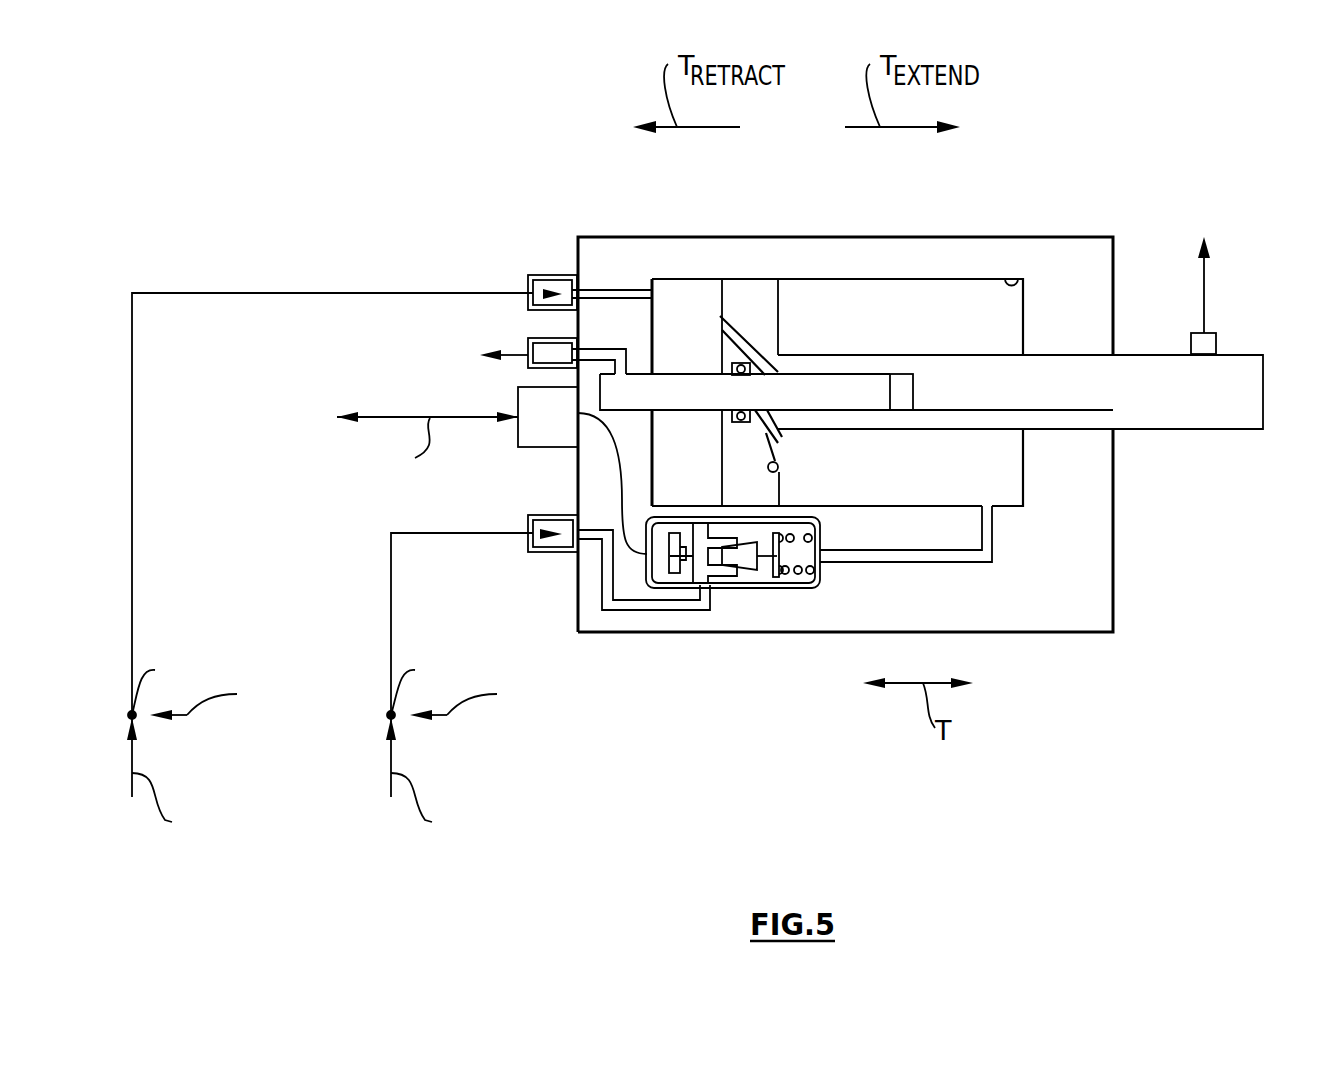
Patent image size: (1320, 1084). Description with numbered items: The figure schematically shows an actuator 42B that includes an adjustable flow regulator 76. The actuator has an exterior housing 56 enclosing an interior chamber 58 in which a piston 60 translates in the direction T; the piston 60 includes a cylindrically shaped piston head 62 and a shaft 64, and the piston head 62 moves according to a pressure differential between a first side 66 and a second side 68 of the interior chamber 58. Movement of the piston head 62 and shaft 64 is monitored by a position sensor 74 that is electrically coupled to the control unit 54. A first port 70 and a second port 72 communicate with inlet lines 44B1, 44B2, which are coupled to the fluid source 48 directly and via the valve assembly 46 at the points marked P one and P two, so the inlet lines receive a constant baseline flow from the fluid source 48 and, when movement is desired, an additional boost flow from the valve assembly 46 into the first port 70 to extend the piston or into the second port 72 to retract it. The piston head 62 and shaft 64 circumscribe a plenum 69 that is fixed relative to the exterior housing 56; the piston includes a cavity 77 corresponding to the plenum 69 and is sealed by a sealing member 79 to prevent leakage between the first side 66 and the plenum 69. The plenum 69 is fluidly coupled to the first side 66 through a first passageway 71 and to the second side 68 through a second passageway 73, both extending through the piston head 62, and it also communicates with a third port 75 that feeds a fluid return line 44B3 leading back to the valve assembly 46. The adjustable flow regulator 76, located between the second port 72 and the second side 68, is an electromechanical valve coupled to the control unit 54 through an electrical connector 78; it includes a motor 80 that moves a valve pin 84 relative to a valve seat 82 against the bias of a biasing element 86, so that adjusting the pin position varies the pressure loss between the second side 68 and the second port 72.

The actuator 42B is at (520, 168).
The inlet line 44B1 is at (432, 293).
The inlet line 44B2 is at (410, 533).
The fluid return line 44B3 is at (517, 350).
The valve assembly 46 is at (339, 838).
The fluid source 48 is at (352, 713).
The control unit 54 is at (1204, 270).
The exterior housing 56 is at (978, 237).
The interior chamber 58 is at (1017, 283).
The piston 60 is at (1170, 460).
The piston head 62 is at (753, 320).
The shaft 64 is at (1245, 430).
The first side 66 is at (697, 322).
The second side 68 is at (997, 338).
The plenum 69 is at (853, 390).
The first port 70 is at (553, 275).
The first passageway 71 is at (778, 357).
The second port 72 is at (548, 555).
The second passageway 73 is at (780, 470).
The position sensor 74 is at (1218, 340).
The third port 75 is at (530, 371).
The adjustable flow regulator 76 is at (769, 613).
The cavity 77 is at (906, 392).
The electrical connector 78 is at (545, 447).
The sealing member 79 is at (742, 363).
The motor 80 is at (687, 568).
The valve seat 82 is at (727, 575).
The valve pin 84 is at (746, 560).
The biasing element 86 is at (815, 590).